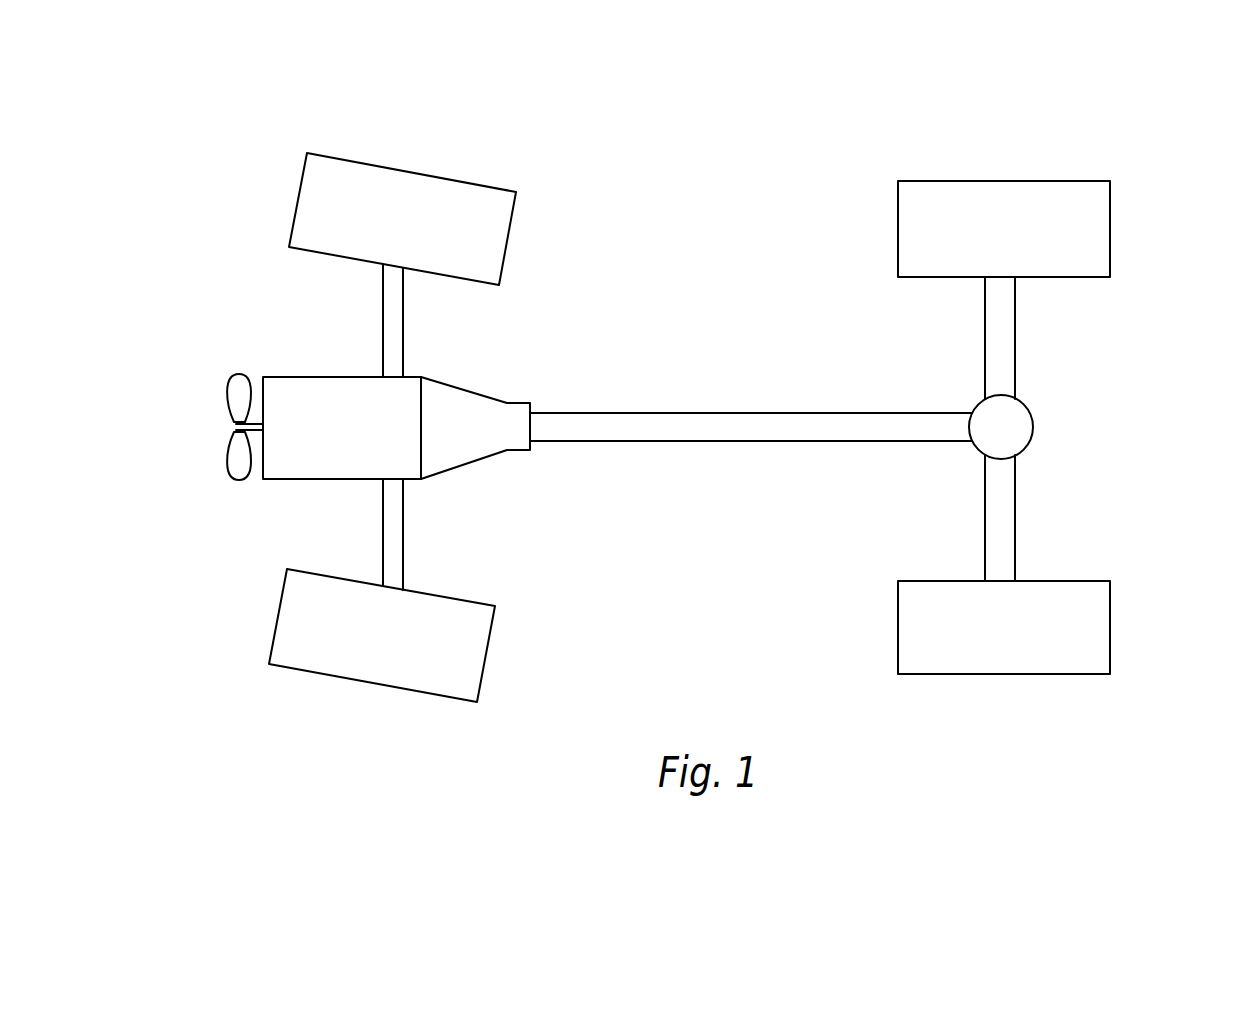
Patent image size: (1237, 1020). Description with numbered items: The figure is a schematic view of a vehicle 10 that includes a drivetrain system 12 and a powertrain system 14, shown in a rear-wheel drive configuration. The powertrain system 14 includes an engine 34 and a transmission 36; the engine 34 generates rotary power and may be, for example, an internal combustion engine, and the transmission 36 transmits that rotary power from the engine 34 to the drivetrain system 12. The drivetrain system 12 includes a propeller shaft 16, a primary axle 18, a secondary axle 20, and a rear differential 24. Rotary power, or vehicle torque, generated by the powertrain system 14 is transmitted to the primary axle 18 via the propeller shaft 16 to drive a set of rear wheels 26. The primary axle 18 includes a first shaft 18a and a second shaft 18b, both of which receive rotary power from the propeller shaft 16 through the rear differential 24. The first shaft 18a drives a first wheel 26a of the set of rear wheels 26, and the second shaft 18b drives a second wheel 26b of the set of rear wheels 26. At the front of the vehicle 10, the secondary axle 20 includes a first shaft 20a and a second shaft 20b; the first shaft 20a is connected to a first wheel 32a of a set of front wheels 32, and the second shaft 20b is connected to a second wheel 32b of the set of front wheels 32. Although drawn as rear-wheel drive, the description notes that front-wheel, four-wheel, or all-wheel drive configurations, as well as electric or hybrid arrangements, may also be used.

The vehicle 10 is at (723, 226).
The drivetrain system 12 is at (690, 368).
The powertrain system 14 is at (281, 357).
The propeller shaft 16 is at (688, 432).
The primary axle 18 is at (1068, 429).
The first shaft 18a is at (1015, 310).
The second shaft 18b is at (1015, 528).
The secondary axle 20 is at (416, 427).
The first shaft 20a is at (383, 304).
The second shaft 20b is at (383, 507).
The rear differential 24 is at (1032, 433).
The set of rear wheels 26 is at (1065, 381).
The first wheel 26a is at (1022, 181).
The second wheel 26b is at (1110, 627).
The set of front wheels 32 is at (454, 386).
The first wheel 32a is at (505, 242).
The second wheel 32b is at (493, 653).
The engine 34 is at (282, 480).
The transmission 36 is at (480, 393).